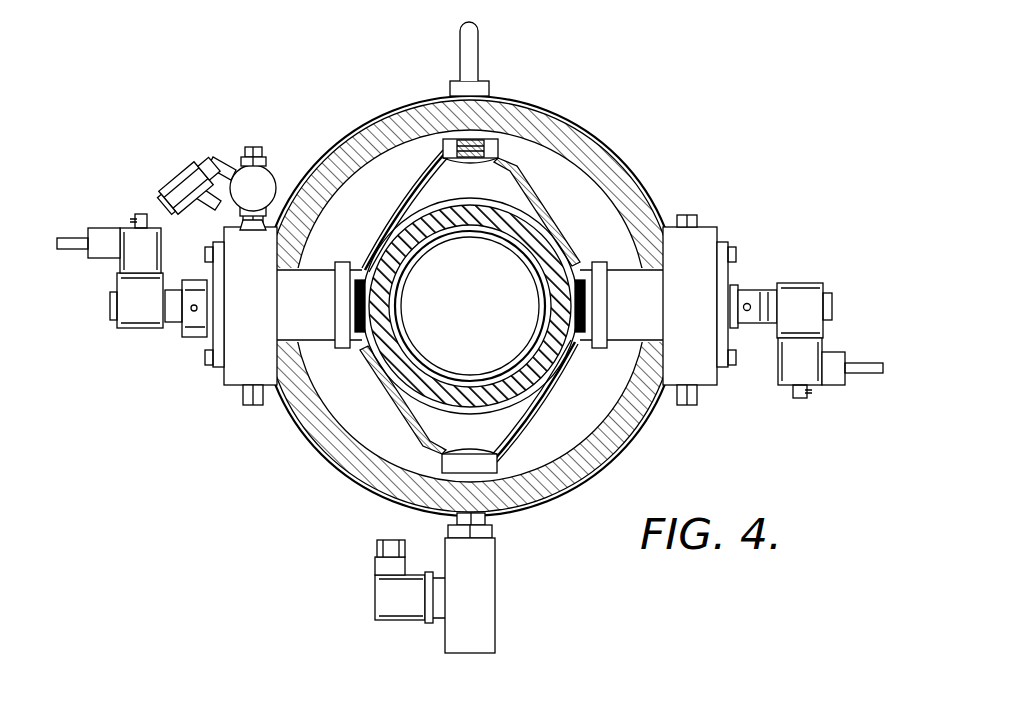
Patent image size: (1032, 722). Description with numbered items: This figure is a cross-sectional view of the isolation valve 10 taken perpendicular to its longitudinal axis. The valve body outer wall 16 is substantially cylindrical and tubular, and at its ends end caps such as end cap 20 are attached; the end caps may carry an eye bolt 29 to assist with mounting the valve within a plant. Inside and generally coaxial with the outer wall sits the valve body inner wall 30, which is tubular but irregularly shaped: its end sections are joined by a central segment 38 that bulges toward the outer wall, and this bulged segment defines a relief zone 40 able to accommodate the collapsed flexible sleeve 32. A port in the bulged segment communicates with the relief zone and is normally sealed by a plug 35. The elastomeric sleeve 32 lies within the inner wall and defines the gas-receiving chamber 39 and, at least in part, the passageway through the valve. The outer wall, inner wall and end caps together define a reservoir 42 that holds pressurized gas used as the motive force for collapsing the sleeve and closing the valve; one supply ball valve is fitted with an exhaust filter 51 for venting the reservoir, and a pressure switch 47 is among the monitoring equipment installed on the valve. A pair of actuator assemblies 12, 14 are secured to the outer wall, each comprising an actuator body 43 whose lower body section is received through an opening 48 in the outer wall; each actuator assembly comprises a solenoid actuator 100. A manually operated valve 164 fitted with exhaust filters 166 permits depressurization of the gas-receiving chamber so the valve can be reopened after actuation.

The valve 10 is at (470, 330).
The actuator assembly 12 is at (186, 355).
The actuator assembly 14 is at (752, 245).
The valve body outer wall 16 is at (346, 462).
The end cap 20 is at (596, 502).
The eye bolt 29 is at (466, 42).
The valve body inner wall 30 is at (542, 212).
The flexible sleeve 32 is at (536, 246).
The plug 35 is at (478, 148).
The central segment 38 is at (416, 184).
The gas-receiving chamber 39 is at (496, 433).
The relief zone 40 is at (496, 190).
The reservoir 42 is at (345, 392).
The actuator body 43 is at (230, 388).
The pressure switch 47 is at (482, 597).
The opening 48 is at (322, 262).
The exhaust filter 51 is at (178, 178).
The solenoid actuator 100 is at (142, 328).
The manually operated valve 164 is at (273, 170).
The exhaust filter 166 is at (250, 145).